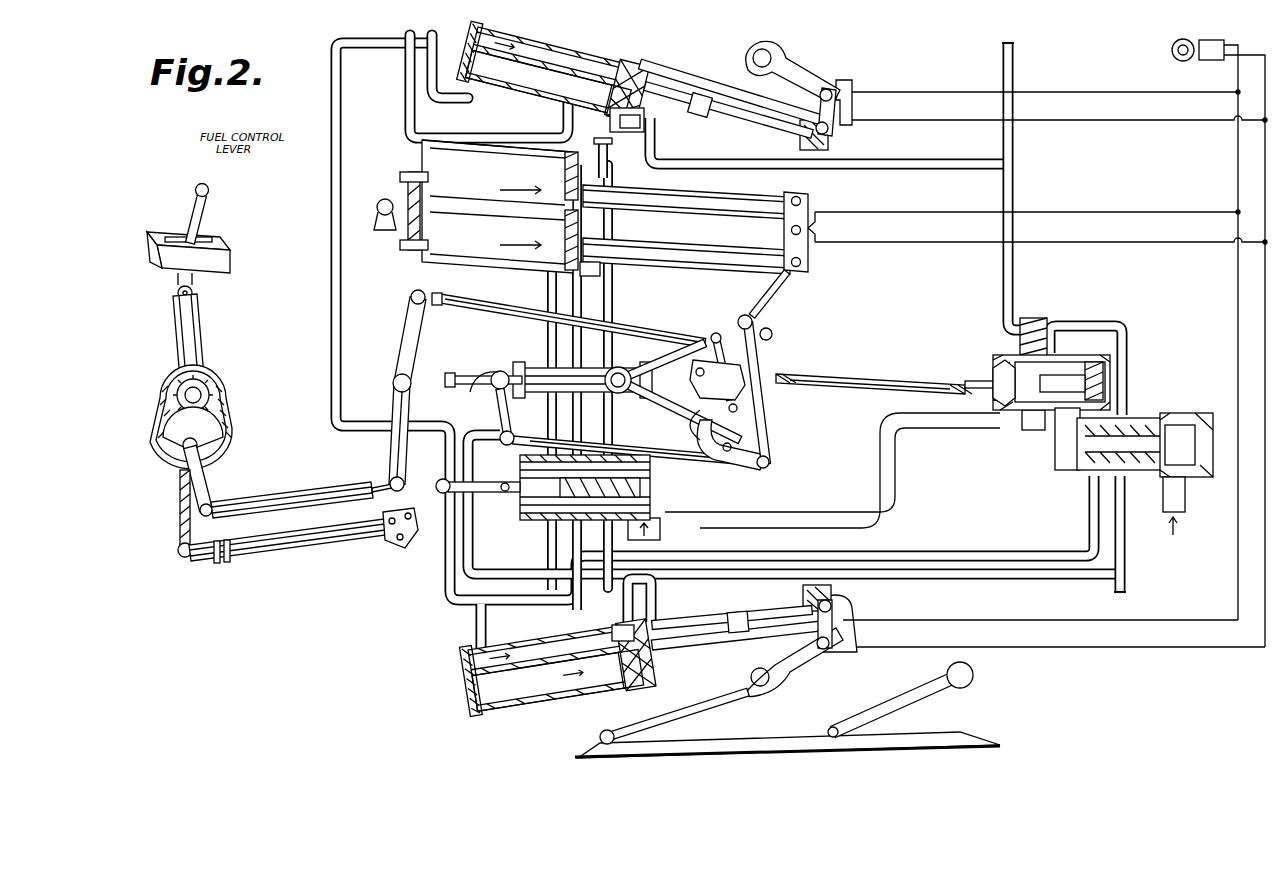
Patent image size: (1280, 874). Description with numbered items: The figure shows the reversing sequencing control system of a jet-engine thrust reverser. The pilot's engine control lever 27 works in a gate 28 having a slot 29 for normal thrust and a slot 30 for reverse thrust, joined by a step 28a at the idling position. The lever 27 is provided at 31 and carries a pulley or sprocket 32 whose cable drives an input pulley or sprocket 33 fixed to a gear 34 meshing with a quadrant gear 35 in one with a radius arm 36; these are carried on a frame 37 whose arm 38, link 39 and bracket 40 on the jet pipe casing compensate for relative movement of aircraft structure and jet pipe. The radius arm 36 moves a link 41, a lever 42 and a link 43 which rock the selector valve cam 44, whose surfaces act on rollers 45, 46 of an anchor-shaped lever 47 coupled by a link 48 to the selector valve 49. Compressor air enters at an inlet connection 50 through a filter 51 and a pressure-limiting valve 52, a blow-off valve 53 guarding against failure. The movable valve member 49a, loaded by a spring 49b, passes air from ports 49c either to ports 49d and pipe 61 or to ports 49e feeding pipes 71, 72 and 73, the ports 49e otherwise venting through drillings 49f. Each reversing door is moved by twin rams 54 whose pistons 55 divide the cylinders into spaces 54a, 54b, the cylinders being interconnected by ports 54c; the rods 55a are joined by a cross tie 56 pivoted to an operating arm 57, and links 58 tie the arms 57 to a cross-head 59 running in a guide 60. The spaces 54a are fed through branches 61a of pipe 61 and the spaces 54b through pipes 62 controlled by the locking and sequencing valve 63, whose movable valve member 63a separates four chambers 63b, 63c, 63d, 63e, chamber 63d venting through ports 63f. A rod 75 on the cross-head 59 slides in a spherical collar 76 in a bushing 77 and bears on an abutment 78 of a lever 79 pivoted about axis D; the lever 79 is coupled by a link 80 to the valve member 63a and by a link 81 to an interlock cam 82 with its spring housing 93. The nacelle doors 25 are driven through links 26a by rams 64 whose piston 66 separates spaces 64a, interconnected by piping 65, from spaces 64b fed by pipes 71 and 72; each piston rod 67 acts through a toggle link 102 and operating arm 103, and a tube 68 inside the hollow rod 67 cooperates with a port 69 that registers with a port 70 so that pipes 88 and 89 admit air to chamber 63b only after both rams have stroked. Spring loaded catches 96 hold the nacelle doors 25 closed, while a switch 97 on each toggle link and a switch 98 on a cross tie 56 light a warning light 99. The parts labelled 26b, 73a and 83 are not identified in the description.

The nacelle doors 25 is at (815, 740).
The forward pair of links 26a is at (700, 698).
The link 26b is at (945, 688).
The pilot's engine control lever 27 is at (200, 205).
The gate 28 is at (225, 250).
The step 28a is at (176, 268).
The slot 29 is at (172, 236).
The slot 30 is at (208, 236).
The lever mounting 31 is at (204, 322).
The pulley or sprocket 32 is at (193, 293).
The input pulley or sprocket 33 is at (215, 375).
The gear 34 is at (210, 392).
The quadrant gear 35 is at (215, 420).
The radius arm 36 is at (205, 478).
The frame 37 is at (200, 445).
The arm 38 is at (180, 513).
The link 39 is at (300, 538).
The bracket 40 is at (402, 543).
The link 41 is at (292, 500).
The lever 42 is at (392, 456).
The link 43 is at (569, 312).
The selector valve cam 44 is at (745, 372).
The roller 45 is at (754, 324).
The roller 46 is at (717, 332).
The anchor-shaped lever 47 is at (772, 336).
The link 48 is at (890, 378).
The selector valve 49 is at (1062, 352).
The movable valve member 49a is at (1085, 380).
The spring 49b is at (1003, 364).
The ports 49c is at (1085, 332).
The ports 49d is at (1100, 358).
The ports 49e is at (1018, 336).
The drillings 49f is at (1000, 412).
The inlet connection 50 is at (1180, 500).
The filter 51 is at (1195, 418).
The pressure-limiting valve 52 is at (1130, 425).
The blow-off valve 53 is at (1200, 460).
The twin ram 54 is at (503, 150).
The air space 54a is at (478, 150).
The air space 54b is at (628, 274).
The ports 54c is at (558, 211).
The pistons 55 is at (560, 194).
The piston rods 55a is at (720, 248).
The cross tie 56 is at (786, 224).
The operating arm 57 is at (770, 292).
The links 58 is at (690, 330).
The cross-head 59 is at (625, 368).
The guide 60 is at (535, 368).
The pipe 61 is at (1090, 514).
The branches 61a is at (406, 98).
The pipes 62 is at (612, 297).
The locking and sequencing valve 63 is at (518, 510).
The movable valve member 63a is at (660, 500).
The chamber 63b is at (655, 510).
The chamber 63c is at (655, 468).
The chamber 63d is at (595, 522).
The chamber 63e is at (560, 522).
The ports 63f is at (642, 488).
The rams 64 is at (520, 690).
The cylinder space 64a is at (550, 58).
The cylinder space 64b is at (725, 50).
The piping 65 is at (426, 93).
The piston 66 is at (640, 92).
The piston rod 67 is at (720, 346).
The tube 68 is at (630, 70).
The port 69 is at (748, 108).
The port 70 is at (660, 118).
The pipe 71 is at (950, 158).
The pipe 72 is at (1062, 324).
The pipe 73 is at (884, 452).
The port 73a is at (655, 540).
The rod 75 is at (472, 385).
The spherical collar 76 is at (497, 400).
The spherical surfaced bushing 77 is at (499, 370).
The abutment 78 is at (447, 381).
The lever 79 is at (417, 434).
The link 80 is at (500, 492).
The link 81 is at (770, 468).
The interlock cam 82 is at (740, 445).
The link 83 is at (762, 405).
The pipe 88 is at (331, 118).
The pipe 89 is at (446, 595).
The housing 93 is at (745, 395).
The spring loaded catches 96 is at (830, 135).
The switch 97 is at (852, 92).
The switch 98 is at (818, 228).
The warning light 99 is at (1178, 58).
The toggle link 102 is at (832, 95).
The operating arm 103 is at (790, 75).
The axis D is at (490, 378).